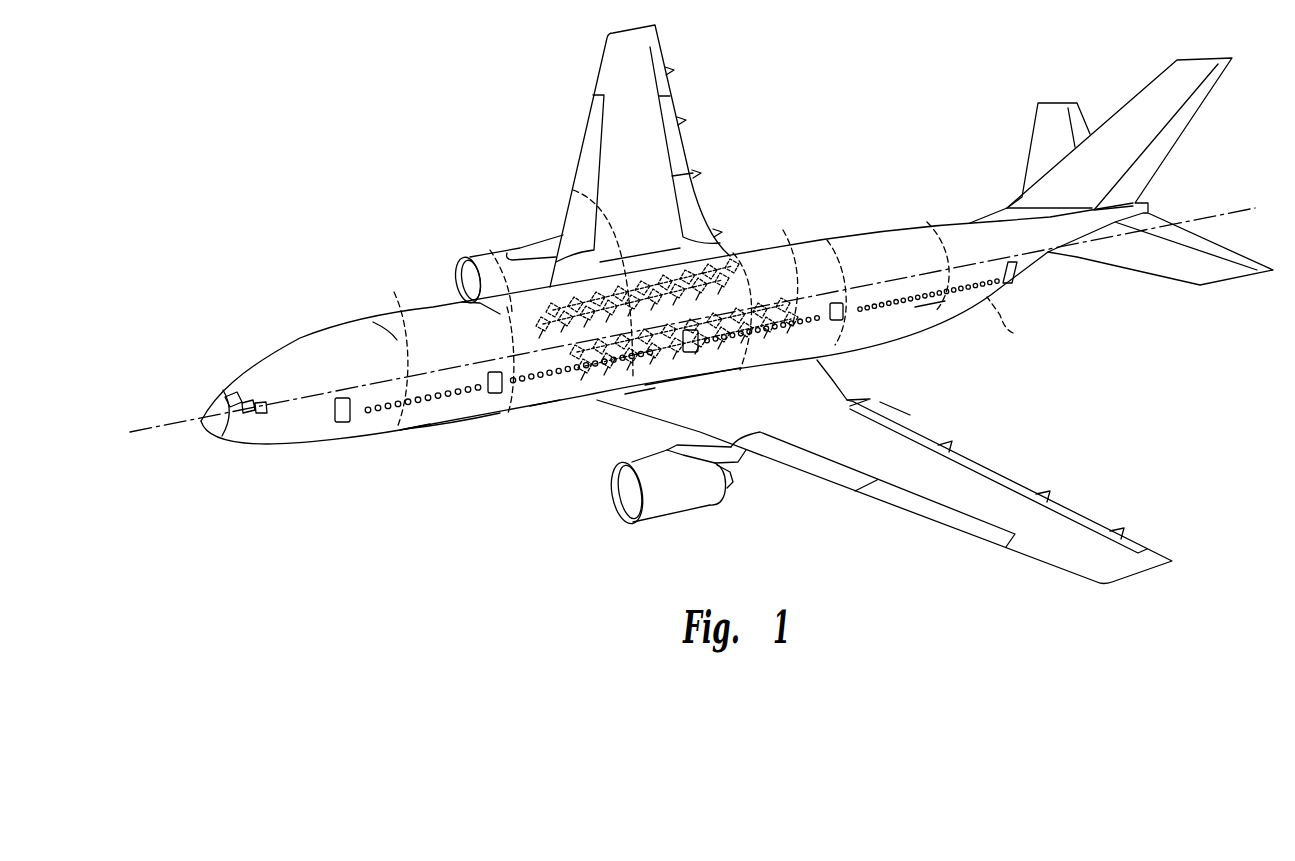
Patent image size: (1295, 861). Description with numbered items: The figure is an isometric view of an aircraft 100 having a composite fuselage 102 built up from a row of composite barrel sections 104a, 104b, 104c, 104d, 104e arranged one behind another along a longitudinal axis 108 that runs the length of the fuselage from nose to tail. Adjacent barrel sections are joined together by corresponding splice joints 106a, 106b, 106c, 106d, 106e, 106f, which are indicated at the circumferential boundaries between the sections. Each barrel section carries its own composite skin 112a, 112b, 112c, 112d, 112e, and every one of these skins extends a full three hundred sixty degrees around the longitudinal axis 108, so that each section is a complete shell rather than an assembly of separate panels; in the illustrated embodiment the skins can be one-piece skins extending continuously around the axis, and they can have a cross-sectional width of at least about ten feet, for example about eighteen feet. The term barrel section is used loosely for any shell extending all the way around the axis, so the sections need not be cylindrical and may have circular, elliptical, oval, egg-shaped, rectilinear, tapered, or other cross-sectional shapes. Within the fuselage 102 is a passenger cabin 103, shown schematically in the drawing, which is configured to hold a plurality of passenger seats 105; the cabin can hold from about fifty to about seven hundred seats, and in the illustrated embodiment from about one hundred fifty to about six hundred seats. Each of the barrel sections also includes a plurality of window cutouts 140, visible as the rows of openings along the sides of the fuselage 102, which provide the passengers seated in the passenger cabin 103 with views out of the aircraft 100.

The aircraft 100 is at (374, 134).
The composite fuselage 102 is at (305, 336).
The passenger cabin 103 is at (641, 258).
The barrel section 104a is at (456, 424).
The barrel section 104b is at (581, 405).
The barrel section 104c is at (670, 372).
The barrel section 104d is at (819, 363).
The barrel section 104e is at (908, 324).
The passenger seats 105 is at (757, 310).
The splice joint 106a is at (394, 288).
The splice joint 106b is at (488, 240).
The splice joint 106c is at (573, 190).
The splice joint 106d is at (778, 362).
The splice joint 106e is at (880, 340).
The splice joint 106f is at (1013, 333).
The longitudinal axis 108 is at (145, 434).
The composite skin 112a is at (413, 427).
The composite skin 112b is at (545, 404).
The composite skin 112c is at (639, 404).
The composite skin 112d is at (850, 398).
The composite skin 112e is at (930, 304).
The window cutouts 140 is at (927, 290).